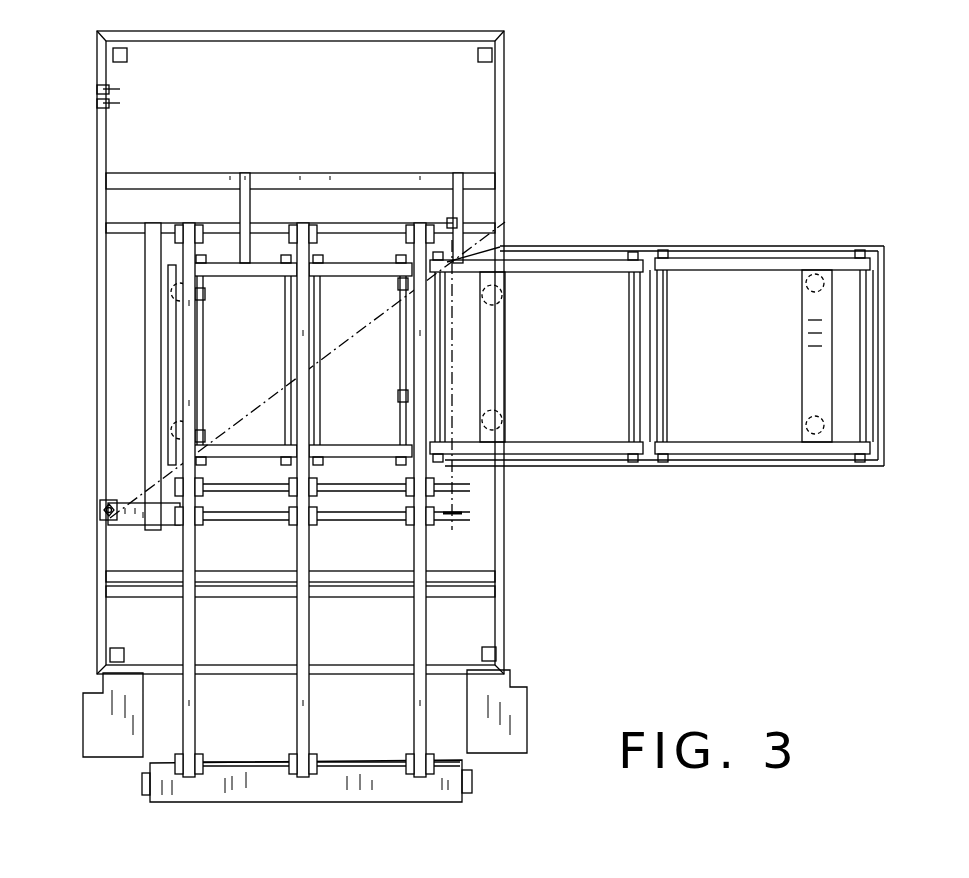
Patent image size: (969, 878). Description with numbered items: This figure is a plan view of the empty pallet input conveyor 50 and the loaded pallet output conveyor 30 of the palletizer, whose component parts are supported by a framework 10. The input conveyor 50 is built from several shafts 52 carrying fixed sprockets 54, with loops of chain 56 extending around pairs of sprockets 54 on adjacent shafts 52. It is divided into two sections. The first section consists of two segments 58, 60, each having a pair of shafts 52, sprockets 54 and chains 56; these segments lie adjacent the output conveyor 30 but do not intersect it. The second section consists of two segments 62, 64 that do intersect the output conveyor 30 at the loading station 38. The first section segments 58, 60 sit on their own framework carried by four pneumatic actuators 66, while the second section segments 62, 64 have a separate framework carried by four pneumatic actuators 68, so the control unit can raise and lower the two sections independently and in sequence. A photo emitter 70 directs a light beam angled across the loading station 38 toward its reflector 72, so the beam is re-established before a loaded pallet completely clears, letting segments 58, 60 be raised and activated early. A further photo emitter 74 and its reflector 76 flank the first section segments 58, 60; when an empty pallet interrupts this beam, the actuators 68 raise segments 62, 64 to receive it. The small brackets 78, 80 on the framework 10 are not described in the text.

The framework 10 is at (106, 200).
The output conveyor 30 is at (160, 636).
The loading station 38 is at (112, 392).
The empty pallet input conveyor 50 is at (610, 215).
The shaft 52 is at (285, 318).
The sprocket 54 is at (197, 256).
The chain 56 is at (228, 270).
The first segment 58 is at (776, 240).
The first segment 60 is at (558, 238).
The second segment 62 is at (340, 485).
The second segment 64 is at (233, 472).
The pneumatic actuator 66 is at (502, 313).
The pneumatic actuator 68 is at (205, 293).
The photo emitter 70 is at (108, 512).
The reflector 72 is at (503, 218).
The photo emitter 74 is at (449, 218).
The reflector 76 is at (453, 516).
The lower bracket 78 is at (97, 103).
The upper bracket 80 is at (97, 89).